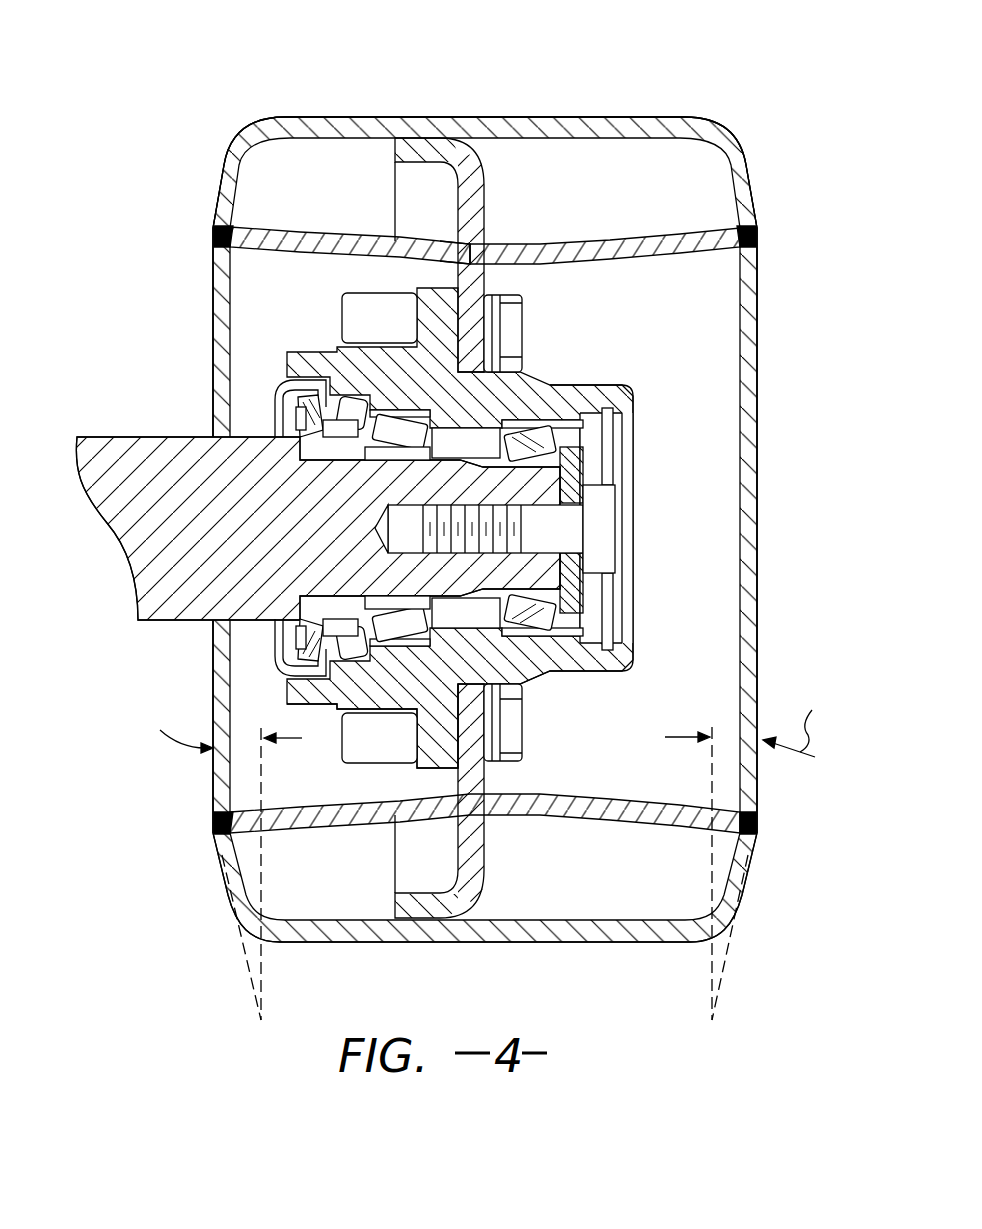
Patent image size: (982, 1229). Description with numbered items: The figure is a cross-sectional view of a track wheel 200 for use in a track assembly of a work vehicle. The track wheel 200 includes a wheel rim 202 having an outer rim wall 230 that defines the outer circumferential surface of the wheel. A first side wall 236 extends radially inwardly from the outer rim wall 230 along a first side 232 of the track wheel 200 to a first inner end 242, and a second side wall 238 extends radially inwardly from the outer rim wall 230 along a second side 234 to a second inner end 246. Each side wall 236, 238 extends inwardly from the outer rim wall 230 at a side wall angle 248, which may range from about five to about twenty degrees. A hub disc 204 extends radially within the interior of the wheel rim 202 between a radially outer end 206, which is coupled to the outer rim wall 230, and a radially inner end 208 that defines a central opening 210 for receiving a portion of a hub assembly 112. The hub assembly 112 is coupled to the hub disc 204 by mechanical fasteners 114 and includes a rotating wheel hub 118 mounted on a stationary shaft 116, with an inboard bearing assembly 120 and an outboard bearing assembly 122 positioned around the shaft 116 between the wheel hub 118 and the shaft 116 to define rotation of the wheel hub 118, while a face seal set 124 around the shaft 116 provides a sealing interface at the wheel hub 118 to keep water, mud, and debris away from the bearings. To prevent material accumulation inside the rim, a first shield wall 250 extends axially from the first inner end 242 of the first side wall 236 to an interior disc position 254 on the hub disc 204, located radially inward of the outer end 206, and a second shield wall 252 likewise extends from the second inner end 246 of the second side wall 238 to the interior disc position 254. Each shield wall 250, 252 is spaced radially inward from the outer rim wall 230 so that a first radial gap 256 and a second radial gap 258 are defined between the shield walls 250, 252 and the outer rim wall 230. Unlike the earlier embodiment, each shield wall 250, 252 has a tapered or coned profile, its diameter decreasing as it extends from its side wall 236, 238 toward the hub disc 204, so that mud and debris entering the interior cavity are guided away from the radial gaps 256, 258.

The track wheel 200 is at (205, 80).
The wheel rim 202 is at (598, 114).
The hub disc 204 is at (486, 798).
The radially outer end 206 is at (388, 163).
The radially inner end 208 is at (502, 395).
The central opening 210 is at (522, 682).
The hub assembly 112 is at (629, 505).
The mechanical fasteners 114 is at (527, 335).
The stationary shaft 116 is at (150, 424).
The wheel hub 118 is at (592, 678).
The inboard bearing assembly 120 is at (432, 600).
The outboard bearing assembly 122 is at (530, 433).
The face seal set 124 is at (278, 410).
The outer rim wall 230 is at (513, 114).
The first side 232 is at (138, 268).
The second side 234 is at (774, 330).
The first side wall 236 is at (234, 174).
The second side wall 238 is at (734, 168).
The first inner end 242 is at (222, 216).
The second inner end 246 is at (747, 204).
The side wall angle 248 is at (471, 849).
The first shield wall 250 is at (285, 240).
The second shield wall 252 is at (623, 243).
The interior disc position 254 is at (494, 240).
The first radial gap 256 is at (341, 207).
The second radial gap 258 is at (678, 207).